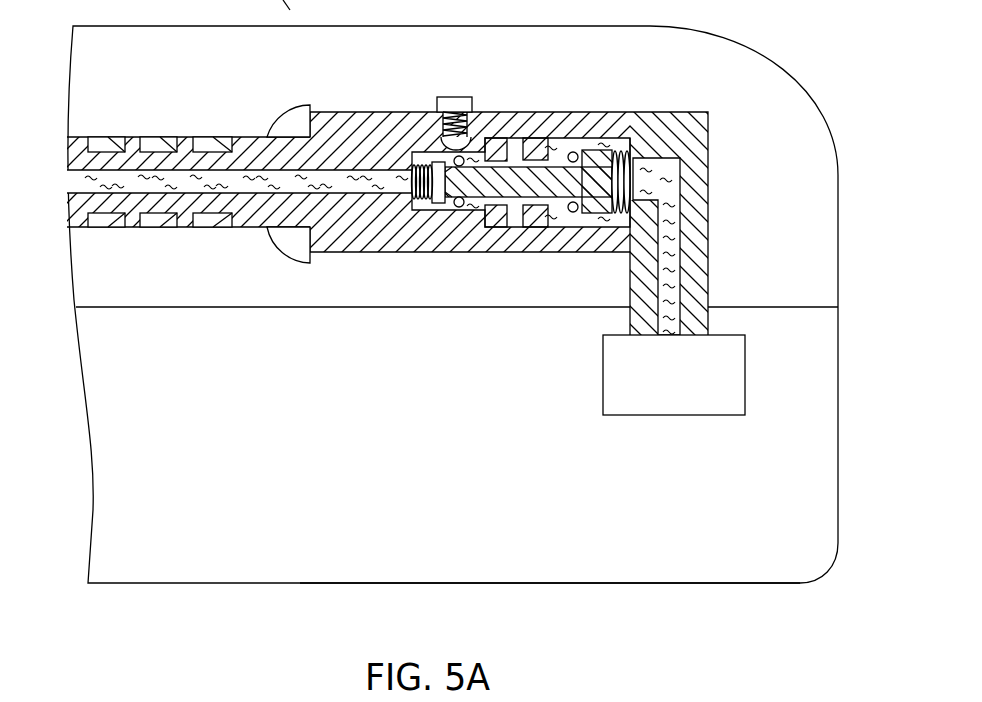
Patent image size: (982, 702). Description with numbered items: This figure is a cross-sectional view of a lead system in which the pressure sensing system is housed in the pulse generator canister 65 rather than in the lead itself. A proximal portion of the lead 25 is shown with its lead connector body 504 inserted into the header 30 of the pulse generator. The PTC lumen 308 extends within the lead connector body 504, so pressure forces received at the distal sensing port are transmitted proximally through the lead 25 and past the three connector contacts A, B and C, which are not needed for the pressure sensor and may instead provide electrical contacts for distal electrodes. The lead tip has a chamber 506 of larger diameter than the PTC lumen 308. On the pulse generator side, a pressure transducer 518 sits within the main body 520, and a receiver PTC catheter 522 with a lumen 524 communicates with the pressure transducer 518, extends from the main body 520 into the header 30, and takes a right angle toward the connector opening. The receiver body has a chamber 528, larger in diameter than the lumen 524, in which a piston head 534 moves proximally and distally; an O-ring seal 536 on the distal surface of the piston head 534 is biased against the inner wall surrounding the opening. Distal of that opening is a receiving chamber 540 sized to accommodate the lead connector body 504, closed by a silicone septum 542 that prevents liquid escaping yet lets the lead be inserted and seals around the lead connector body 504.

The header 30 is at (753, 56).
The pulse generator canister 65 is at (755, 585).
The main body 520 is at (441, 468).
The lead connector body 504 is at (242, 148).
The connector contact A is at (101, 137).
The connector contact B is at (156, 137).
The connector contact C is at (208, 137).
The PTC lumen 308 is at (267, 186).
The silicone septum 542 is at (300, 117).
The chamber 528 is at (570, 216).
The receiving chamber 540 is at (514, 146).
The piston head 534 is at (590, 156).
The chamber 506 is at (472, 153).
The O-ring seal 536 is at (572, 152).
The receiver PTC catheter 522 is at (700, 224).
The lumen 524 is at (674, 264).
The pressure transducer 518 is at (687, 385).
The lead 25 is at (160, 236).